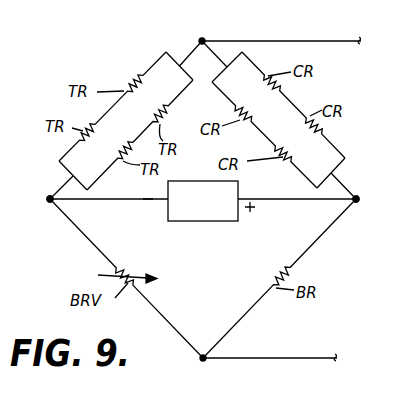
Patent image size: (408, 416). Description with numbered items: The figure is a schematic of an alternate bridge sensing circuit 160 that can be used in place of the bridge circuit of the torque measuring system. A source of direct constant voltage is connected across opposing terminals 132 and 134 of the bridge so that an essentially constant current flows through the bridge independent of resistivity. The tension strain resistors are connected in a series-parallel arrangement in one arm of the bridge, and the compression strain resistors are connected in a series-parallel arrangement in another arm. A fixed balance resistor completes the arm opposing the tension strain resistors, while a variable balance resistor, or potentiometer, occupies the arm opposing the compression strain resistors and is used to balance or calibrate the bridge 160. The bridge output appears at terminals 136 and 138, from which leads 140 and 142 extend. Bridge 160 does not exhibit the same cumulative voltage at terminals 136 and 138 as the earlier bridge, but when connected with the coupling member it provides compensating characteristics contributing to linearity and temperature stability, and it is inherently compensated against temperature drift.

The terminal 132 is at (49, 202).
The terminal 134 is at (357, 202).
The terminal 136 is at (207, 40).
The terminal 138 is at (205, 360).
The upper supply terminal lead 140 is at (296, 41).
The lower supply terminal lead 142 is at (279, 360).
The bridge sensing circuit 160 is at (203, 218).